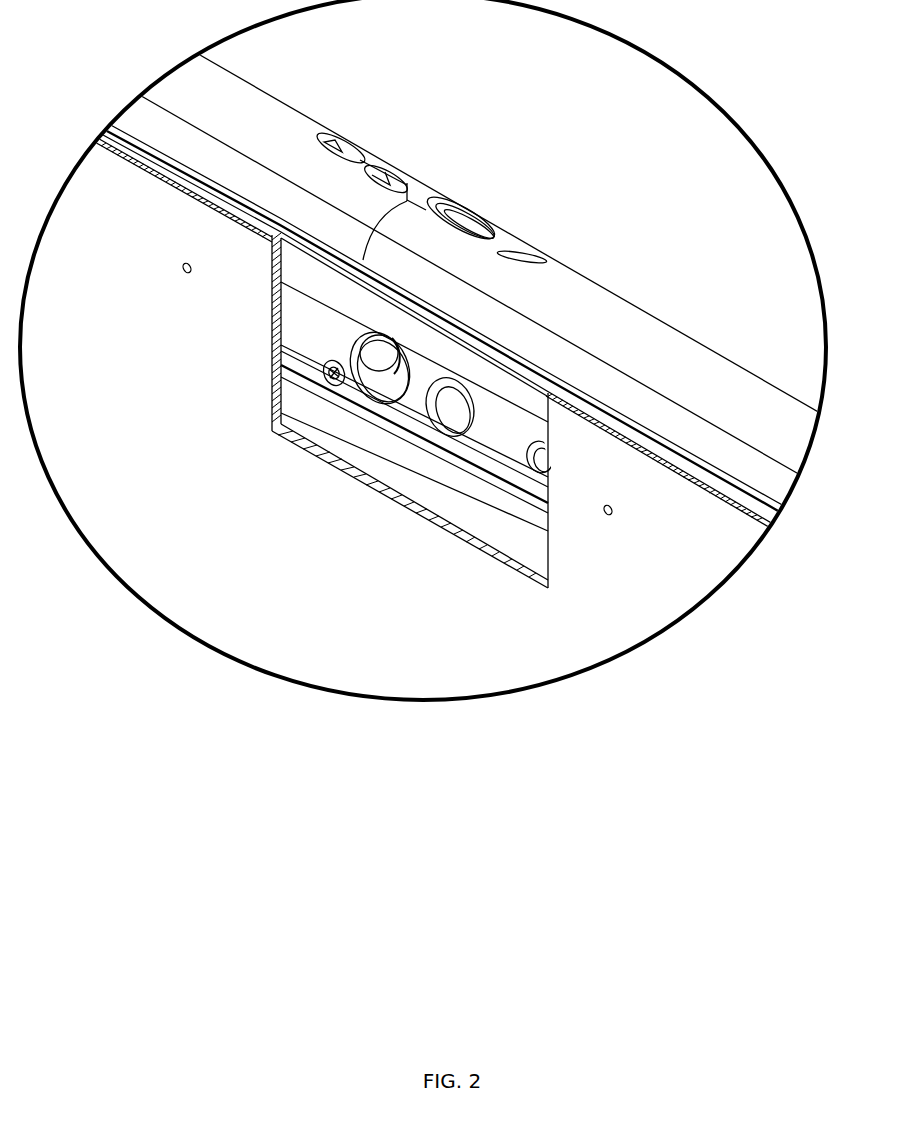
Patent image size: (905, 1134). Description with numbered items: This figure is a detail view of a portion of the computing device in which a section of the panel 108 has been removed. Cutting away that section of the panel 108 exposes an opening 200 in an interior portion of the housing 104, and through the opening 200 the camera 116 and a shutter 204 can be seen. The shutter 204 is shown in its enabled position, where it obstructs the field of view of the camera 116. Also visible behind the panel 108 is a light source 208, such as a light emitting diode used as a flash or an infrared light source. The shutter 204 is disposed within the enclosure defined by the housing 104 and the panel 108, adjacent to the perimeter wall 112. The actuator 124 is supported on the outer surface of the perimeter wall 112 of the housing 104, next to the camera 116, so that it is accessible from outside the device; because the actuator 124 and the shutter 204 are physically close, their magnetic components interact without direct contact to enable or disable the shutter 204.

The housing 104 is at (459, 276).
The panel 108 is at (103, 470).
The perimeter wall 112 is at (480, 256).
The camera 116 is at (489, 455).
The actuator 124 is at (451, 207).
The opening 200 is at (381, 455).
The shutter 204 is at (463, 438).
The light source 208 is at (390, 358).